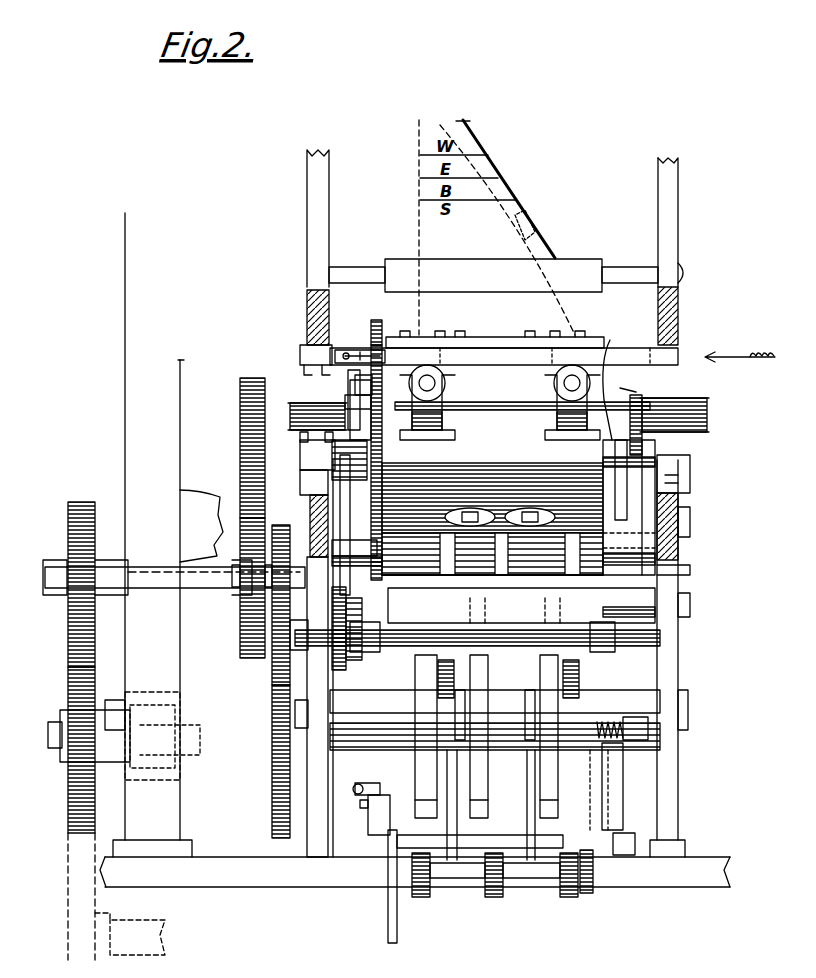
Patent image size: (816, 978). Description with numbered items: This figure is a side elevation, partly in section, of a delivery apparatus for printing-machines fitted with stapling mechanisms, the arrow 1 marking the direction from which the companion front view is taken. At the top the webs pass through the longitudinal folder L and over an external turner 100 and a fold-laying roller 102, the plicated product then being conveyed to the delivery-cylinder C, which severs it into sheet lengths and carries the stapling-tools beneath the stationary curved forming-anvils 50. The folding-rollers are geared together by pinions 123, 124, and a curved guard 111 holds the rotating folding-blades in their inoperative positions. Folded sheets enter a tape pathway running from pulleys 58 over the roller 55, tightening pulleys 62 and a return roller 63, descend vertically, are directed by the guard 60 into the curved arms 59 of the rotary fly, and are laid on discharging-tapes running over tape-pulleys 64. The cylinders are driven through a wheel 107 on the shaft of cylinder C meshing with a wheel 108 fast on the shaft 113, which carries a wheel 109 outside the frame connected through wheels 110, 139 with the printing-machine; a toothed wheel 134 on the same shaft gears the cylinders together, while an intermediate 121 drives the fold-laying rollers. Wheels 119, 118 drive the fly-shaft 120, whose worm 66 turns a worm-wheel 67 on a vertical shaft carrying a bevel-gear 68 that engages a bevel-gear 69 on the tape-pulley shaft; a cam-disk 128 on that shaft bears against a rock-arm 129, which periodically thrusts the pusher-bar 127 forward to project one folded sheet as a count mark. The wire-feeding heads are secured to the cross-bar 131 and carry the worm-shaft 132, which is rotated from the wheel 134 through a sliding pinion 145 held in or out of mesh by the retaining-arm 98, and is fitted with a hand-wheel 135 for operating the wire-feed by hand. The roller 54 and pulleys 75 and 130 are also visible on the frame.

The arrow 1 is at (740, 365).
The forming-anvil 50 is at (470, 425).
The folding-roller 54 is at (603, 572).
The roller 55 is at (418, 652).
The pulleys 58 is at (510, 554).
The curved arms 59 is at (415, 665).
The guard 60 is at (520, 780).
The tightening pulleys 62 is at (508, 679).
The roller 63 is at (400, 606).
The tape-pulleys 64 is at (420, 897).
The worm 66 is at (597, 722).
The worm-wheel 67 is at (635, 728).
The bevel-gear 68 is at (635, 842).
The bevel-gear 69 is at (593, 885).
The lever 75 is at (646, 388).
The retaining-arm 98 is at (376, 357).
The external turner 100 is at (506, 275).
The fold-laying roller 102 is at (510, 341).
The wheel 107 is at (258, 378).
The wheel 108 is at (252, 660).
The wheel 109 is at (80, 502).
The wheel 110 is at (68, 810).
The curved guard 111 is at (620, 510).
The shaft 113 is at (205, 588).
The wheel 118 is at (272, 820).
The wheel 119 is at (280, 525).
The fly-shaft 120 is at (372, 712).
The intermediate 121 is at (382, 330).
The pinion 123 is at (365, 560).
The pinion 124 is at (378, 582).
The pusher-bar 127 is at (445, 825).
The cam-disk 128 is at (388, 900).
The rock-arm 129 is at (392, 805).
The pulley 130 is at (305, 400).
The cross-bar 131 is at (504, 357).
The worm-shaft 132 is at (522, 398).
The toothed wheel 134 is at (371, 494).
The hand-wheel 135 is at (604, 350).
The wheel 139 is at (75, 893).
The pinion 145 is at (358, 410).
The delivery-cylinder C is at (492, 489).
The longitudinal folder L is at (492, 152).